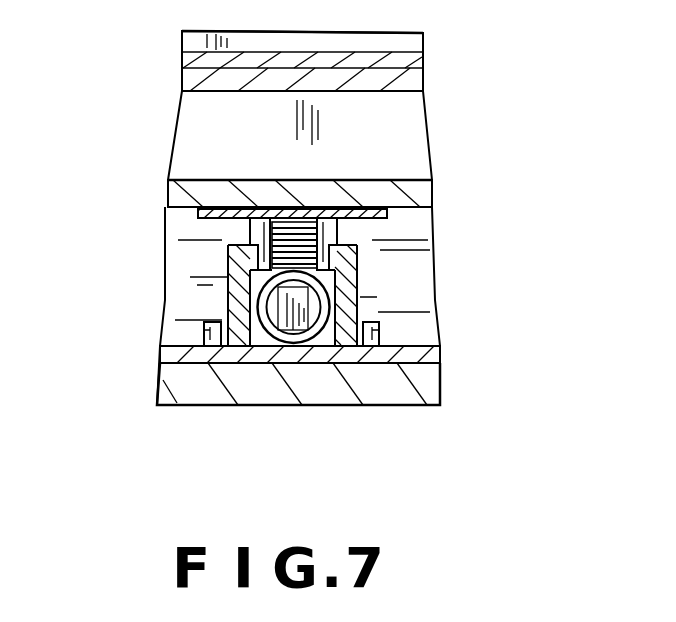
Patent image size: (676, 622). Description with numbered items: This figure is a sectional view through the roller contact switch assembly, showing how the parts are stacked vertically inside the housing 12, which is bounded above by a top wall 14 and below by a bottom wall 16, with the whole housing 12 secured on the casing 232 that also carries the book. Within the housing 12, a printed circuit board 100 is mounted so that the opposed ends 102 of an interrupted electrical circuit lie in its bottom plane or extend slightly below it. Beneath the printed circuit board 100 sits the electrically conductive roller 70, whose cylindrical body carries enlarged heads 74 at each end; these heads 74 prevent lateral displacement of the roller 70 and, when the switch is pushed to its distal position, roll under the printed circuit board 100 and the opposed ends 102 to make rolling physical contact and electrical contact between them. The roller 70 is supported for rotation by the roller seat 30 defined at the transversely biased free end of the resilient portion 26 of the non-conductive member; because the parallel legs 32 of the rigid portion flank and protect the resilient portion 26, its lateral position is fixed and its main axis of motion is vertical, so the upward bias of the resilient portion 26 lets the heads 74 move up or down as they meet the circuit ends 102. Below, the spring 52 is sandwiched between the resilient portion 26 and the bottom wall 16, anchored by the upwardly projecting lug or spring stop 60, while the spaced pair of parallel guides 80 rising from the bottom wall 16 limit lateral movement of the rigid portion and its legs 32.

The housing 12 is at (180, 45).
The top wall 14 is at (412, 47).
The resilient portion 26 is at (435, 262).
The roller seat 30 is at (300, 228).
The legs 32 is at (228, 266).
The spring 52 is at (330, 305).
The lug or spring stop 60 is at (268, 316).
The roller 70 is at (246, 228).
The enlarged heads 74 is at (234, 207).
The guides 80 is at (204, 337).
The printed circuit board 100 is at (405, 199).
The opposed ends 102 is at (265, 207).
The bottom wall 16 is at (420, 353).
The casing 232 is at (420, 388).